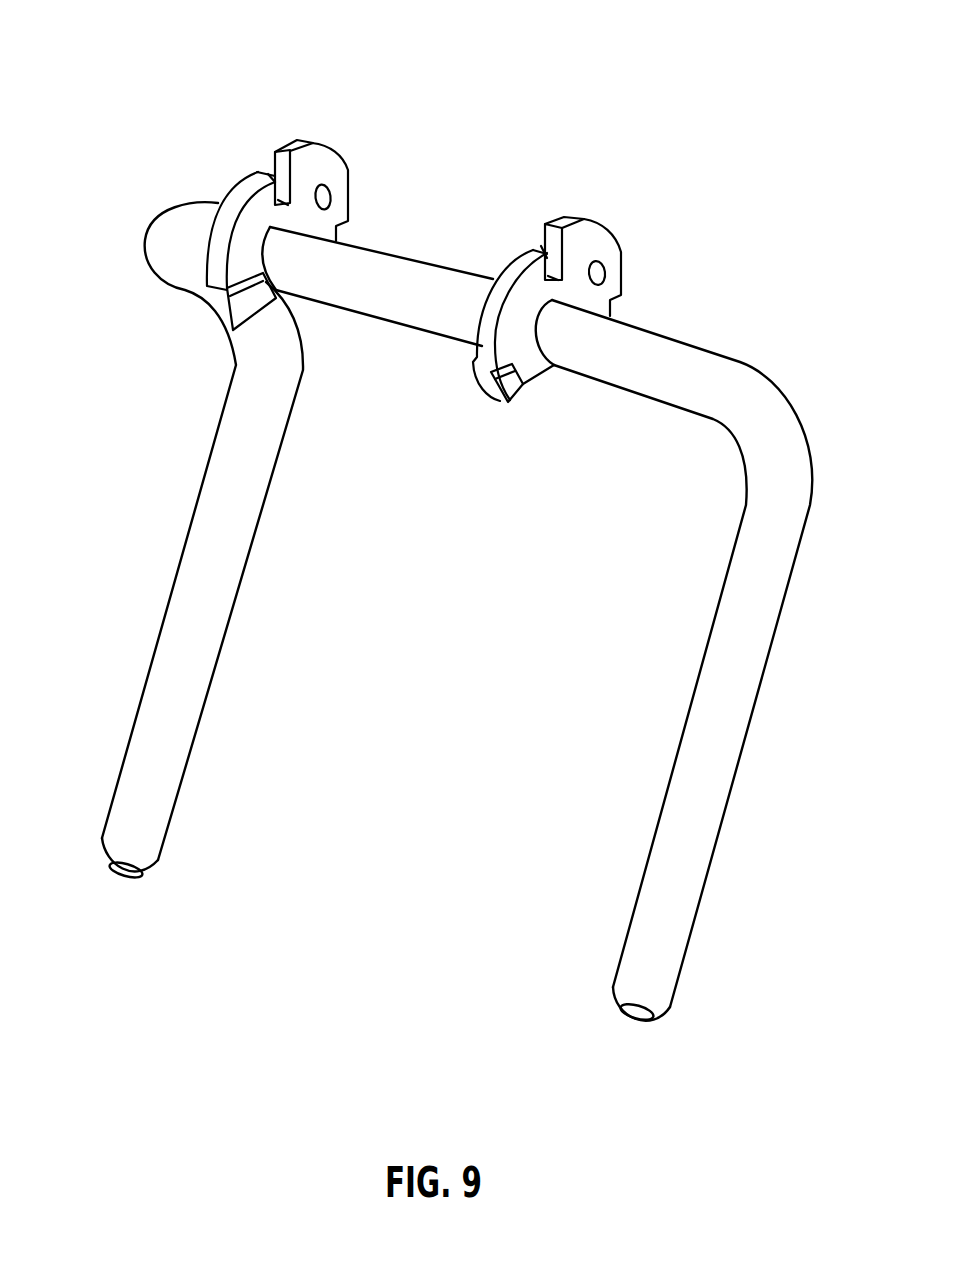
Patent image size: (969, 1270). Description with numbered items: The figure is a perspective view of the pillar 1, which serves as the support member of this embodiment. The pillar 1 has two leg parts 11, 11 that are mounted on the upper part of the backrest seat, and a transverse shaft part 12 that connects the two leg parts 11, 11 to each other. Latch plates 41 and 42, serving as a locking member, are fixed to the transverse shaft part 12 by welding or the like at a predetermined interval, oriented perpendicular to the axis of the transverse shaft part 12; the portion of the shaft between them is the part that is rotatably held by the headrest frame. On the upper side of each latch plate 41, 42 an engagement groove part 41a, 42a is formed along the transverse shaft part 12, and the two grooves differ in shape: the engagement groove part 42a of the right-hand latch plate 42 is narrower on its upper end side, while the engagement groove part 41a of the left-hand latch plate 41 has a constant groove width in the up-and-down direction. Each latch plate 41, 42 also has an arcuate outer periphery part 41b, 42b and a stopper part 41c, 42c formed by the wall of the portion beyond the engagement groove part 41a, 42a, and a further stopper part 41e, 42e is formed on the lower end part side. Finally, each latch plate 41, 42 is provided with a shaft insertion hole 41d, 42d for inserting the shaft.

The pillar 1 is at (454, 523).
The leg part 11 is at (195, 690).
The transverse shaft part 12 is at (383, 305).
The latch plate 41 is at (344, 160).
The engagement groove part 41a is at (273, 172).
The arcuate outer periphery part 41b is at (225, 208).
The stopper part 41c is at (287, 150).
The shaft insertion hole 41d is at (332, 194).
The stopper part 41e is at (257, 312).
The latch plate 42 is at (617, 238).
The engagement groove part 42a is at (548, 249).
The arcuate outer periphery part 42b is at (488, 314).
The stopper part 42c is at (558, 230).
The shaft insertion hole 42d is at (605, 273).
The stopper part 42e is at (490, 384).